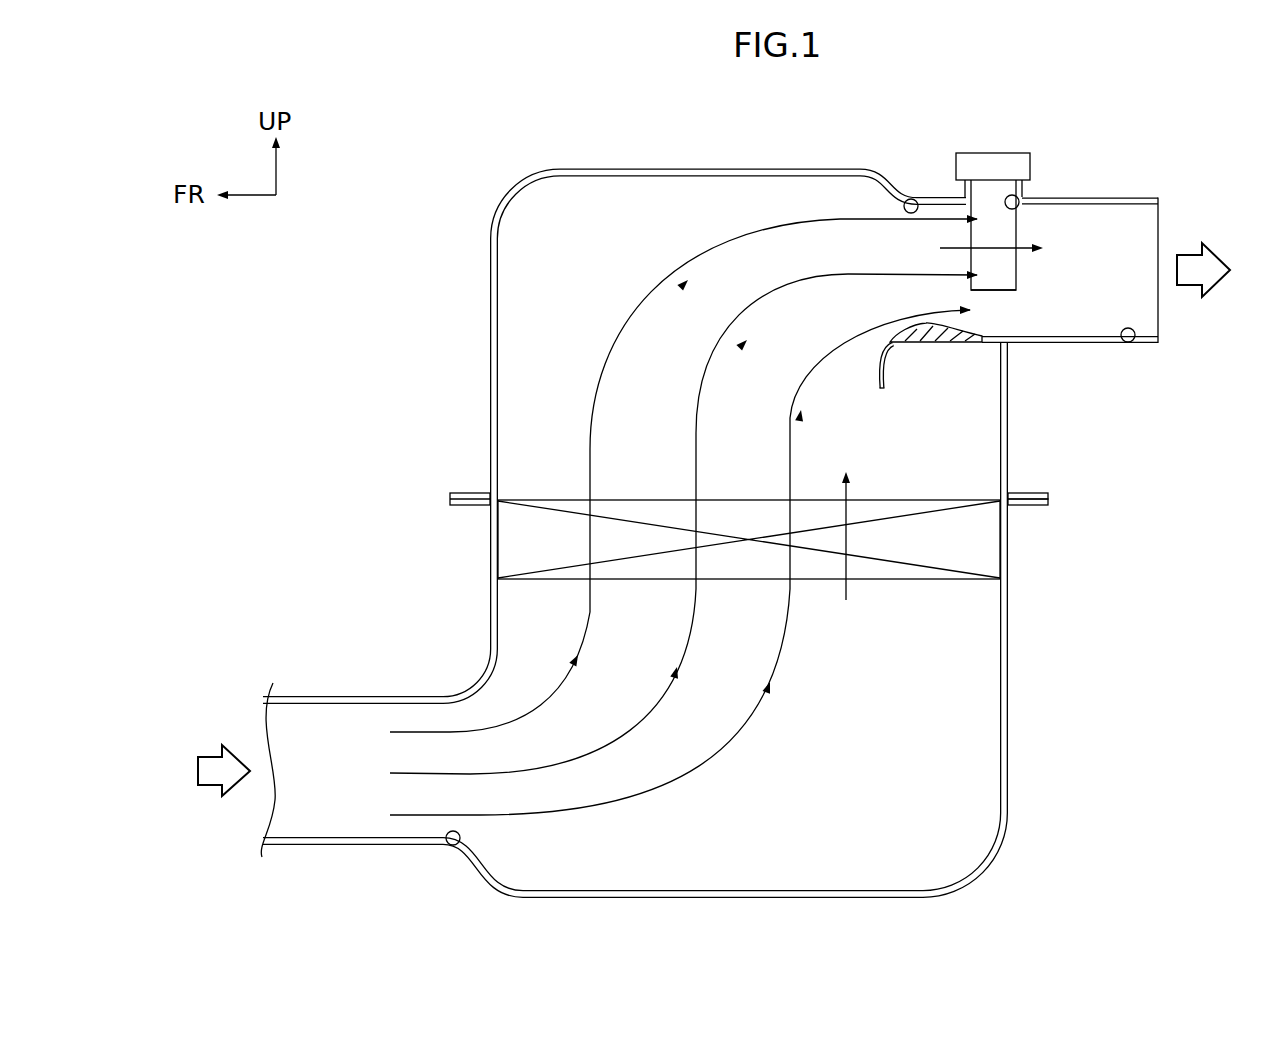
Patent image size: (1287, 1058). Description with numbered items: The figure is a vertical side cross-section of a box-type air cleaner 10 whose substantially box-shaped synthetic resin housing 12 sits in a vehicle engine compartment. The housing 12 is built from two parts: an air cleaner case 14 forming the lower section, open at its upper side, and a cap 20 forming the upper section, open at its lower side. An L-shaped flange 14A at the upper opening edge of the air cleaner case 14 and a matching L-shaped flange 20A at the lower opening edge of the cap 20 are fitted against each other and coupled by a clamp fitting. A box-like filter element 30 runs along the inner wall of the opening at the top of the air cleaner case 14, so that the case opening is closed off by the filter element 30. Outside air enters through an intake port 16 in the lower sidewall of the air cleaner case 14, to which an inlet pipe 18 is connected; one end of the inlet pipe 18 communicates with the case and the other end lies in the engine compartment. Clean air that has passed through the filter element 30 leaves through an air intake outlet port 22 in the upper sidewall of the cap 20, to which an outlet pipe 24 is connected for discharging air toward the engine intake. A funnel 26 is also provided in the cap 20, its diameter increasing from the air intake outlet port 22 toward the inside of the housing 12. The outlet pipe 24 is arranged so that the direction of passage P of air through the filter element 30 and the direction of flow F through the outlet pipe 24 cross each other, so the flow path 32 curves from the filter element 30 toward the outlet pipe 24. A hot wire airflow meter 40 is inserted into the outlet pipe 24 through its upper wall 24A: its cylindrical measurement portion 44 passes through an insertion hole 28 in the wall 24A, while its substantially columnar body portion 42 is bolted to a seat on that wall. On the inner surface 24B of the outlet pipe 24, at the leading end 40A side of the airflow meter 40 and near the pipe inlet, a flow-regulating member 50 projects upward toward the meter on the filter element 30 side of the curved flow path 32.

The air cleaner 10 is at (737, 490).
The housing 12 is at (352, 438).
The air cleaner case 14 is at (490, 593).
The flange 14A is at (1028, 505).
The intake port 16 is at (452, 846).
The inlet pipe 18 is at (315, 846).
The cap 20 is at (490, 382).
The flange 20A is at (1027, 493).
The air intake outlet port 22 is at (903, 197).
The outlet pipe 24 is at (1098, 264).
The wall 24A is at (1145, 198).
The inner surface 24B is at (1132, 342).
The funnel 26 is at (880, 377).
The insertion hole 28 is at (1020, 200).
The filter element 30 is at (955, 557).
The flow path 32 is at (712, 333).
The airflow meter 40 is at (1037, 182).
The leading end 40A is at (1000, 290).
The body portion 42 is at (1012, 160).
The measurement portion 44 is at (1020, 228).
The flow-regulating member 50 is at (940, 330).
The direction of passage P is at (848, 592).
The direction of flow F is at (968, 250).